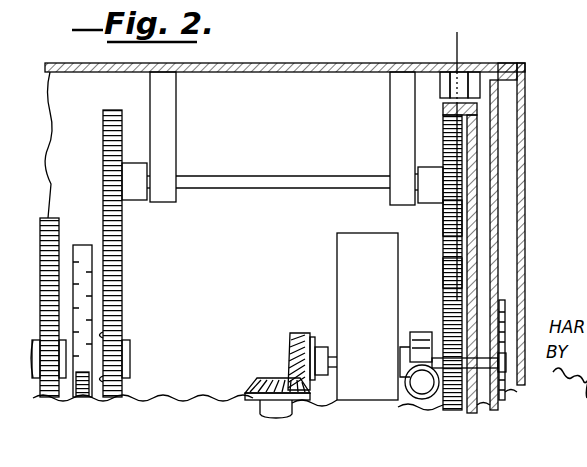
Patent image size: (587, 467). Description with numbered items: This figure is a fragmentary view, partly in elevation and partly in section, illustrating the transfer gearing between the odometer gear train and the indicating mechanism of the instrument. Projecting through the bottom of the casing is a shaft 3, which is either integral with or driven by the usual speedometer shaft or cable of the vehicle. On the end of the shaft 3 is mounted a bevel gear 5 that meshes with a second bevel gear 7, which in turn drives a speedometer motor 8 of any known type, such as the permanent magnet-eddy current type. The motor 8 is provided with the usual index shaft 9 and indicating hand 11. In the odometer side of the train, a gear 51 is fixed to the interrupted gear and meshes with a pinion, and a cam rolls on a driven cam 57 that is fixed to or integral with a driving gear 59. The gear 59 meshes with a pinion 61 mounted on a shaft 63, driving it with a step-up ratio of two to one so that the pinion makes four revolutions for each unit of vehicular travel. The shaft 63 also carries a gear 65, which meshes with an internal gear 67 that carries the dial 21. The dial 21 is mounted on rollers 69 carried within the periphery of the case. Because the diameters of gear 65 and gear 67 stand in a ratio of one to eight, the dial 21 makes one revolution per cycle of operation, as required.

The shaft 3 is at (457, 48).
The bevel gear 5 is at (259, 383).
The second bevel gear 7 is at (306, 334).
The speedometer motor 8 is at (357, 240).
The index shaft 9 is at (432, 339).
The indicating hand 11 is at (504, 334).
The dial 21 is at (448, 142).
The gear 51 is at (50, 218).
The driven cam 57 is at (78, 245).
The driving gear 59 is at (122, 308).
The pinion 61 is at (110, 111).
The shaft 63 is at (238, 177).
The gear 65 is at (443, 218).
The internal gear 67 is at (443, 271).
The rollers 69 is at (454, 71).